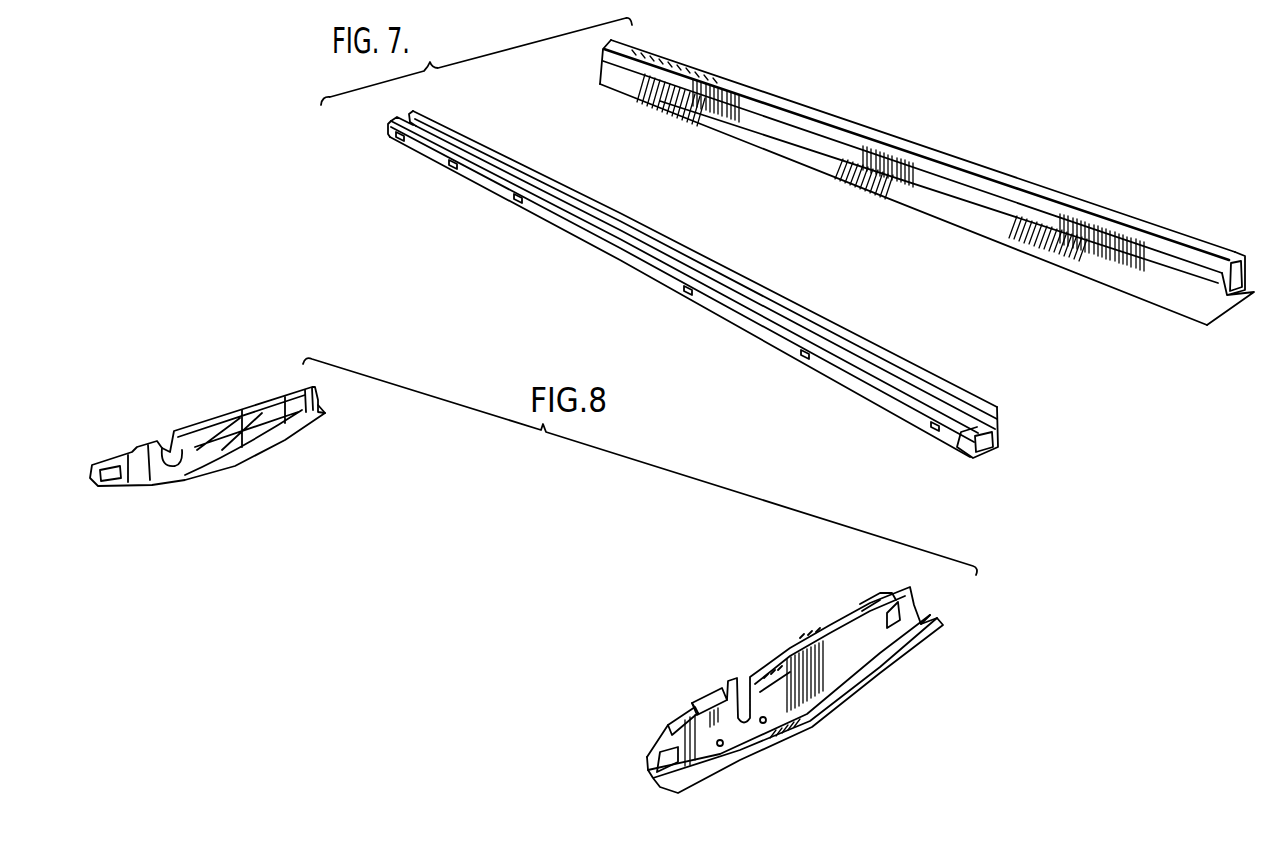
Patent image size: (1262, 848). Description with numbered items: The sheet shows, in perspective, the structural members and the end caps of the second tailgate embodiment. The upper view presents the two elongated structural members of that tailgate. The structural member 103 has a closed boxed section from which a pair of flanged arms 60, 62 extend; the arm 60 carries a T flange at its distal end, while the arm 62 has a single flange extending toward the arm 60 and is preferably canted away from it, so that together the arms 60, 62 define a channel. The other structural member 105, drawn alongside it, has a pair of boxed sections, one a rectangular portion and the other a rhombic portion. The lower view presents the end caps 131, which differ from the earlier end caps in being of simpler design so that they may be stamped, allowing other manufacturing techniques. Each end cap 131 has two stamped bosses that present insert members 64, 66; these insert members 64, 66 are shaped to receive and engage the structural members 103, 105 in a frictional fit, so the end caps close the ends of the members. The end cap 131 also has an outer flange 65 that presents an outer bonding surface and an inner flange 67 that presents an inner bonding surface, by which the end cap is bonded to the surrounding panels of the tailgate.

In FIG. 7, the flanged arm 60 is at (999, 411).
In FIG. 7, the flanged arm 62 is at (962, 450).
In FIG. 8, the insert member 64 is at (108, 470).
In FIG. 8, the outer flange 65 is at (823, 697).
In FIG. 8, the insert member 66 is at (315, 428).
In FIG. 8, the inner flange 67 is at (830, 627).
In FIG. 7, the structural member 103 is at (757, 335).
In FIG. 7, the structural member 105 is at (1052, 198).
In FIG. 8, the end cap 131 is at (282, 455).